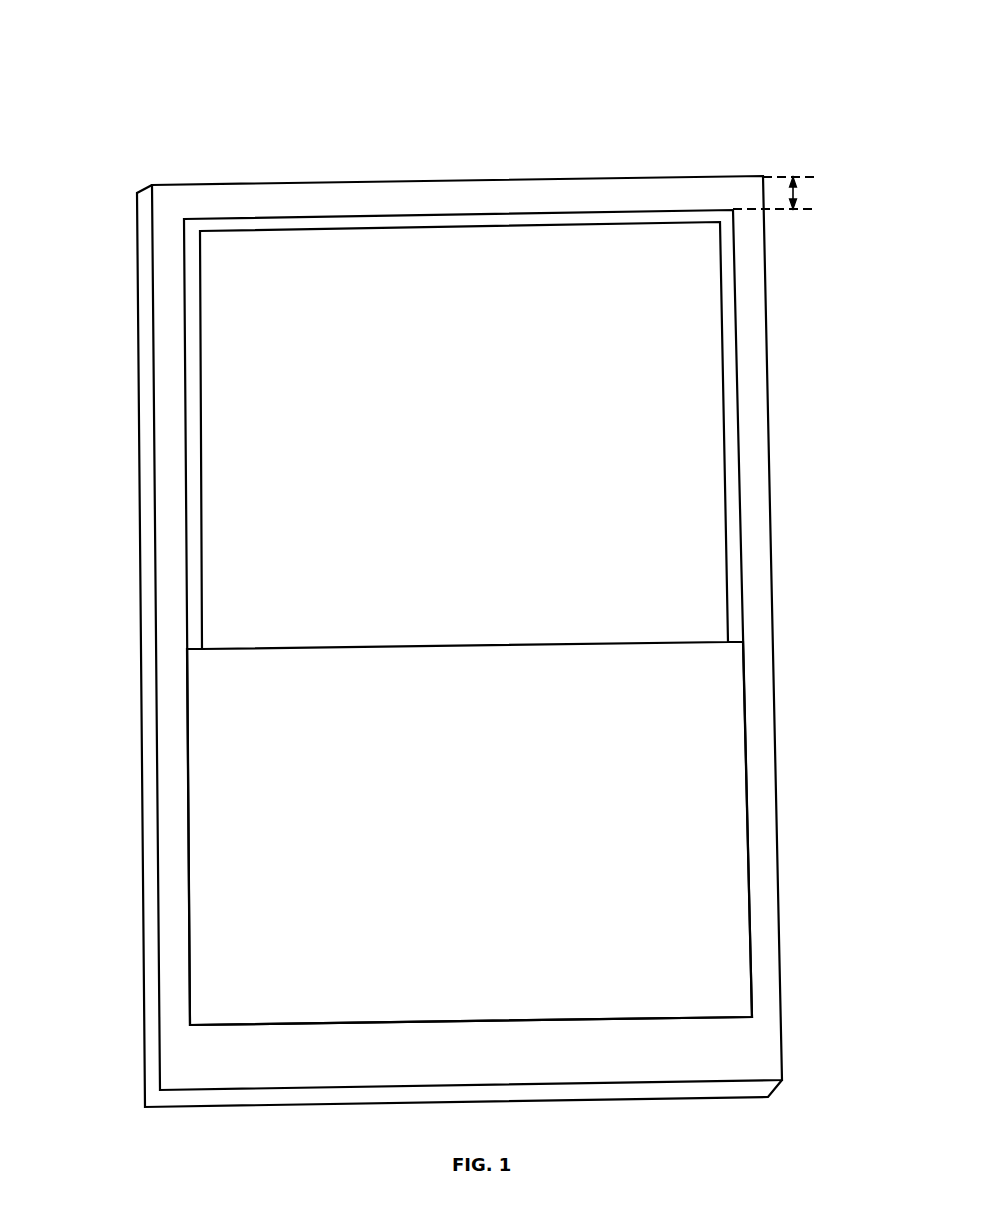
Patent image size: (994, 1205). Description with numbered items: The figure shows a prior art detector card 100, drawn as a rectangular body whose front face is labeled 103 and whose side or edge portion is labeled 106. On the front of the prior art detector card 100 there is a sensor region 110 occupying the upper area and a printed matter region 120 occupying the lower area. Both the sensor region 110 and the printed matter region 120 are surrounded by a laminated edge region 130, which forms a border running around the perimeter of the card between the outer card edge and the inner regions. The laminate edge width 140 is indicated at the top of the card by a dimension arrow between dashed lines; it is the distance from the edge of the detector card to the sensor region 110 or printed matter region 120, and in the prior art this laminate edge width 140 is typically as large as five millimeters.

The prior art detector card 100 is at (490, 114).
The front face of housing 103 is at (155, 313).
The housing side 106 is at (138, 394).
The sensor region 110 is at (643, 290).
The printed matter region 120 is at (645, 786).
The laminated edge region 130 is at (750, 335).
The laminate edge width 140 is at (812, 195).